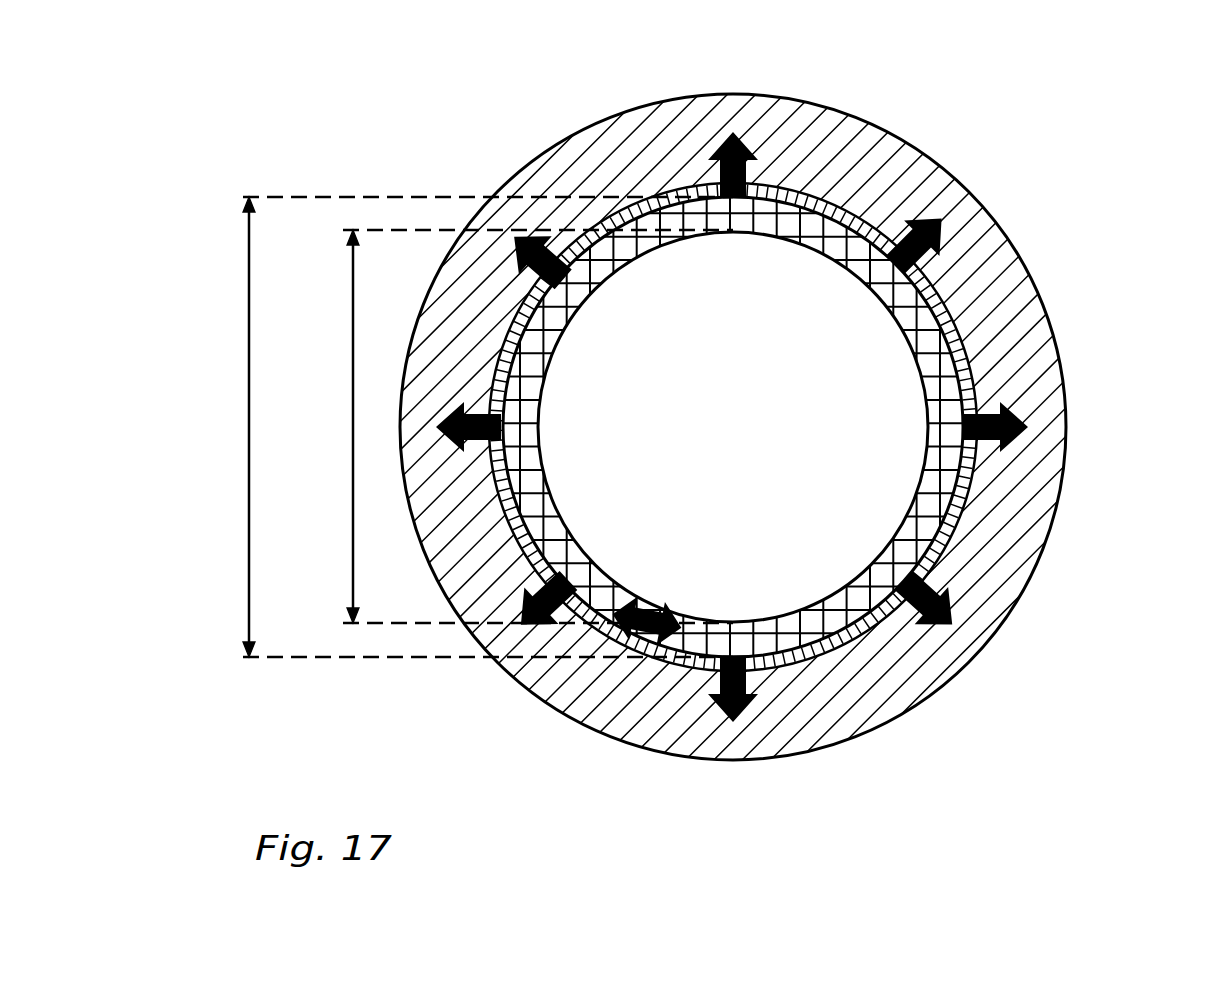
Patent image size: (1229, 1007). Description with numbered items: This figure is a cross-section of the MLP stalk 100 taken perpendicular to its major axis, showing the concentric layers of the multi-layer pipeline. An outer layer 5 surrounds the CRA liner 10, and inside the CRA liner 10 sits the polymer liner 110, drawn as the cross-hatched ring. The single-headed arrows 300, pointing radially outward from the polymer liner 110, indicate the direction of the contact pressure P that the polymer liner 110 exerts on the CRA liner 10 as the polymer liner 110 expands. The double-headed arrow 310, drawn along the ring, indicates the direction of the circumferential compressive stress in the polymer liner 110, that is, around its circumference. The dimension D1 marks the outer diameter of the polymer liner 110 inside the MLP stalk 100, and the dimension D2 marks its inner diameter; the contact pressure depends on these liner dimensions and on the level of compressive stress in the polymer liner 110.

The outer layer 5 is at (985, 585).
The CRA liner 10 is at (953, 328).
The MLP stalk 100 is at (614, 420).
The polymer liner 110 is at (833, 243).
The single-headed arrows 300 is at (742, 152).
The double-headed arrow 310 is at (650, 620).
The outer diameter of the polymer liner D1 is at (249, 396).
The inner diameter of the polymer liner D2 is at (353, 478).